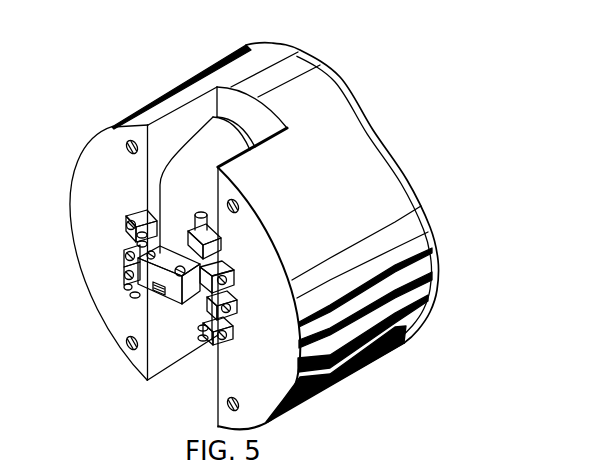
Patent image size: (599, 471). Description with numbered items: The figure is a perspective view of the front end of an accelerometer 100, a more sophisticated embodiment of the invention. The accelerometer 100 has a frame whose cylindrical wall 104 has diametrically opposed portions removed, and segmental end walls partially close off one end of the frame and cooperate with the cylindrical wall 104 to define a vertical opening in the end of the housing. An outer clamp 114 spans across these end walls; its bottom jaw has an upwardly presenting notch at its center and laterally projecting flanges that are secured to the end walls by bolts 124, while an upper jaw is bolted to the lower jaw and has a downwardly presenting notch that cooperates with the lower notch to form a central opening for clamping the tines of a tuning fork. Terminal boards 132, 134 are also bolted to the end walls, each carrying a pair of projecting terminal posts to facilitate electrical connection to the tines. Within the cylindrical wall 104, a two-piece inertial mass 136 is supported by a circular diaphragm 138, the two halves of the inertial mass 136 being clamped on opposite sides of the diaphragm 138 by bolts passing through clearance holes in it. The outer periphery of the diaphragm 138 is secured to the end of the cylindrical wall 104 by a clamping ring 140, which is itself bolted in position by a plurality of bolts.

The accelerometer 100 is at (98, 86).
The cylindrical wall 104 is at (210, 68).
The outer clamp 114 is at (157, 298).
The bolts 124 is at (124, 252).
The terminal board 132 is at (128, 213).
The terminal board 134 is at (230, 260).
The two-piece inertial mass 136 is at (208, 130).
The circular diaphragm 138 is at (412, 176).
The clamping ring 140 is at (347, 78).